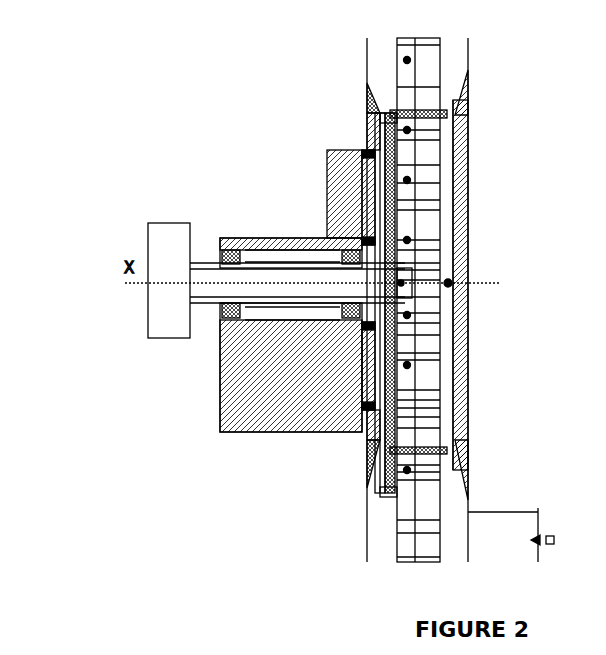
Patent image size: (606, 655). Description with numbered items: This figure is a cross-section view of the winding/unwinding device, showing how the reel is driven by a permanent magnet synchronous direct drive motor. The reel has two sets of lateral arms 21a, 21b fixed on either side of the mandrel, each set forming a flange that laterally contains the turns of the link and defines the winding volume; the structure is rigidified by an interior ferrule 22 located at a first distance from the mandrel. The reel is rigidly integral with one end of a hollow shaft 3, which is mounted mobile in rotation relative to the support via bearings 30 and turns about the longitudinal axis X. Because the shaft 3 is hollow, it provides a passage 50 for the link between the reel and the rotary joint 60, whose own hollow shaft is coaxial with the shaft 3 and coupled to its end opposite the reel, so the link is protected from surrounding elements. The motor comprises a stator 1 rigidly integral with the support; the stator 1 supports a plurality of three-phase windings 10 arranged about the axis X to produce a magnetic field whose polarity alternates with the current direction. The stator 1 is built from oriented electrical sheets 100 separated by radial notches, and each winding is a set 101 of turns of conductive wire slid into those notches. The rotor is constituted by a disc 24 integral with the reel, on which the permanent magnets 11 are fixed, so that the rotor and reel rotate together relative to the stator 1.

The stator 1 is at (327, 178).
The shaft 3 is at (236, 238).
The windings 10 is at (337, 362).
The permanent magnets 11 is at (462, 432).
The lateral arms 21a is at (367, 88).
The lateral arms 21b is at (468, 100).
The interior ferrule 22 is at (443, 110).
The disc 24 is at (390, 490).
The bearings 30 is at (345, 313).
The passage 50 is at (402, 283).
The rotary joint 60 is at (148, 320).
The oriented electrical sheets 100 is at (363, 368).
The set of turns 101 is at (345, 375).